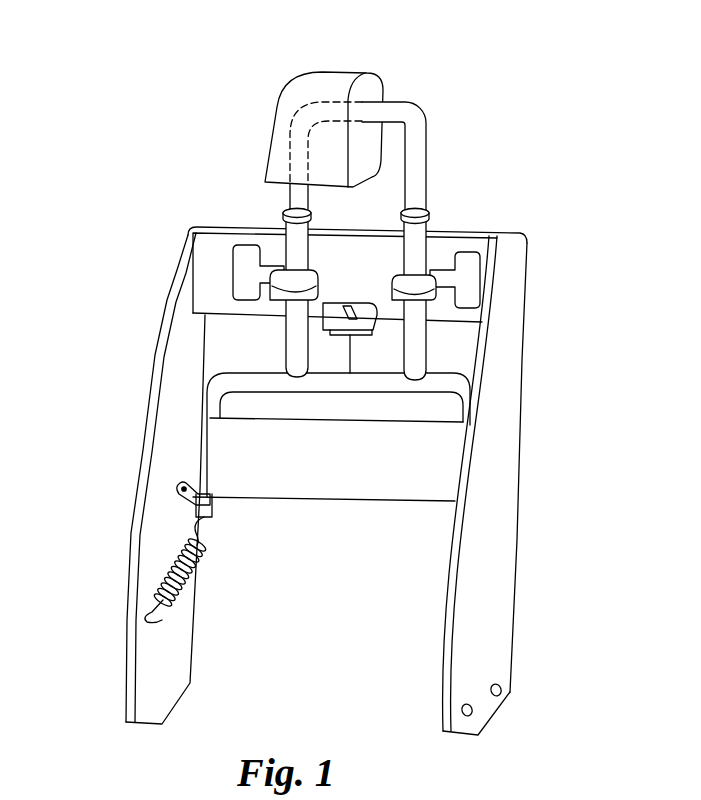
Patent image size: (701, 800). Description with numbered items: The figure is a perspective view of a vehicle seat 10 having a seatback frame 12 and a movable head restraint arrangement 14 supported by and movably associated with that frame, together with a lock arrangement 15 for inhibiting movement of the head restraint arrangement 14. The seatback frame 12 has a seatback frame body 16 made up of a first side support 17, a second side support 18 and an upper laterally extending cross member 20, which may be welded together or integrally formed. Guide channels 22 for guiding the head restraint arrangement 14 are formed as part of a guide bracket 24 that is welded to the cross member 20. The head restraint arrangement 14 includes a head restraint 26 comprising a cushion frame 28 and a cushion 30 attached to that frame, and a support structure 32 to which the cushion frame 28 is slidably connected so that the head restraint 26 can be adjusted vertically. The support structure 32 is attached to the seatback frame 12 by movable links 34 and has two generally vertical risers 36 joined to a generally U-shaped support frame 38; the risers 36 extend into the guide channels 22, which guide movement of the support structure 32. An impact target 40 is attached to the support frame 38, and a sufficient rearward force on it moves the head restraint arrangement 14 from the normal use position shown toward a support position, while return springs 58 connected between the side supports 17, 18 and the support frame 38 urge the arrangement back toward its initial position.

The vehicle seat 10 is at (143, 178).
The seatback frame 12 is at (110, 689).
The head restraint arrangement 14 is at (462, 160).
The lock arrangement 15 is at (366, 352).
The seatback frame body 16 is at (127, 572).
The first side support 17 is at (125, 637).
The second side support 18 is at (517, 528).
The cross member 20 is at (488, 237).
The guide channels 22 is at (272, 302).
The guide bracket 24 is at (470, 250).
The head restraint 26 is at (262, 105).
The cushion frame 28 is at (428, 136).
The cushion 30 is at (367, 73).
The support structure 32 is at (203, 403).
The movable links 34 is at (178, 501).
The risers 36 is at (288, 340).
The support frame 38 is at (405, 383).
The impact target 40 is at (285, 497).
The return springs 58 is at (197, 567).